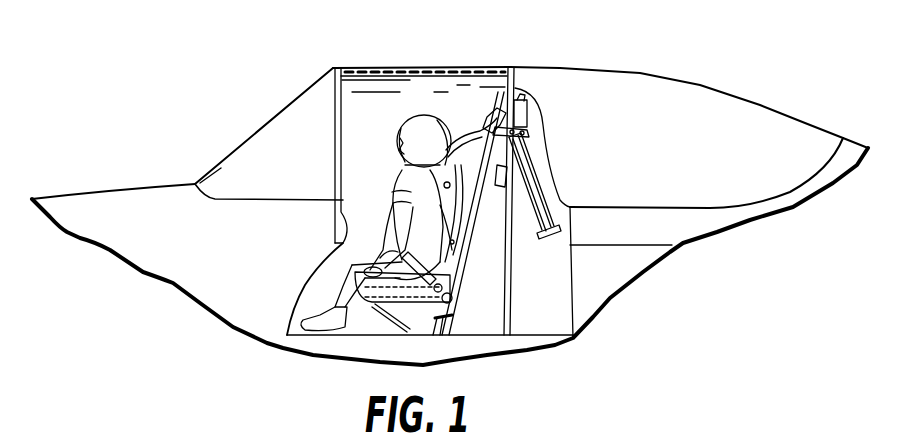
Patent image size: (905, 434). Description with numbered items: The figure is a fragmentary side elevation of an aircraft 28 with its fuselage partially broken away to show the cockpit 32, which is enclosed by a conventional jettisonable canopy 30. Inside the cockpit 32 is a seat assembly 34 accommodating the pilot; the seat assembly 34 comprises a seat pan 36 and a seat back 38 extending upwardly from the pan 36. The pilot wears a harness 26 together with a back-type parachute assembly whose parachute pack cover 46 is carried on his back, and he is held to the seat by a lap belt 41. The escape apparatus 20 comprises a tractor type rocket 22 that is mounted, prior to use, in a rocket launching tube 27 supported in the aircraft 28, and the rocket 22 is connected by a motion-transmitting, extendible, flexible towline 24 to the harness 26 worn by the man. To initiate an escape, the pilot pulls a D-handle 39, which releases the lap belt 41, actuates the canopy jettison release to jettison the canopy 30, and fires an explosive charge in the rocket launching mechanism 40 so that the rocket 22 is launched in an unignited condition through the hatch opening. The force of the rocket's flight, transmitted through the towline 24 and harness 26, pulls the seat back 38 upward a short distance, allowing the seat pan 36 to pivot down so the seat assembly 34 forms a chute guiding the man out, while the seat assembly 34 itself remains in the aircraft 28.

The apparatus 20 is at (532, 151).
The tractor type rocket 22 is at (490, 110).
The towline 24 is at (498, 188).
The harness 26 is at (397, 195).
The rocket launching tube 27 is at (538, 195).
The aircraft 28 is at (274, 108).
The jettisonable canopy 30 is at (378, 66).
The cockpit 32 is at (368, 145).
The seat assembly 34 is at (462, 138).
The seat pan 36 is at (397, 260).
The seat back 38 is at (454, 242).
The D-handle 39 is at (403, 303).
The rocket launching mechanism 40 is at (548, 241).
The lap belt 41 is at (443, 286).
The parachute pack cover 46 is at (454, 250).